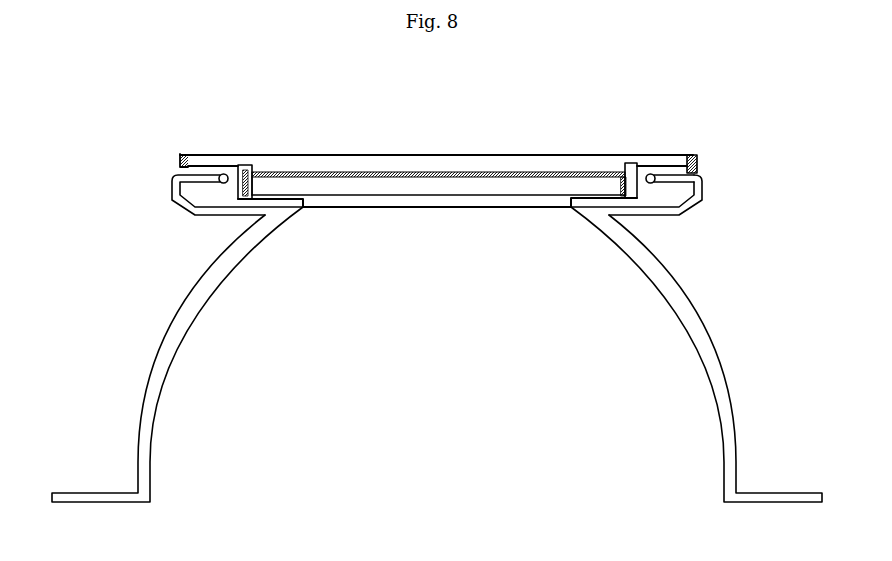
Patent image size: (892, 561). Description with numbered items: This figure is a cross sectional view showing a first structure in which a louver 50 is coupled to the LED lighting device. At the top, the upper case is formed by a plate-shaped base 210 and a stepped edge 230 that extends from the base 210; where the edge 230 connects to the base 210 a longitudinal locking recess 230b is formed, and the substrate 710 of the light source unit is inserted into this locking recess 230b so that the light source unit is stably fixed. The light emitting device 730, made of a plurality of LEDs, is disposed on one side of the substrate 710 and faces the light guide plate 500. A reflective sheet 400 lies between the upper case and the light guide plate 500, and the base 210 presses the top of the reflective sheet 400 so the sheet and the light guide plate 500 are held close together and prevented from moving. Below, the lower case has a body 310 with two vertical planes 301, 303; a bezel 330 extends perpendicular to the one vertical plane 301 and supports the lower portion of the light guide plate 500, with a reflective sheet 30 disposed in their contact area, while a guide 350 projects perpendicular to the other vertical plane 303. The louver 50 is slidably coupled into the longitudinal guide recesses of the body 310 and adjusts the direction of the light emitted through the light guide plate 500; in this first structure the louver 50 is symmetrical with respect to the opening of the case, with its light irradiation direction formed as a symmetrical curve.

The reflective sheet 30 is at (284, 195).
The louver 50 is at (717, 363).
The base 210 is at (499, 155).
The edge 230 is at (672, 155).
The locking recess 230b is at (632, 163).
The vertical plane 301 is at (649, 212).
The vertical plane 303 is at (660, 262).
The body 310 is at (651, 229).
The bezel 330 is at (585, 196).
The guide 350 is at (698, 160).
The reflective sheet 400 is at (356, 172).
The light guide plate 500 is at (430, 195).
The substrate 710 is at (243, 165).
The light emitting device 730 is at (247, 172).